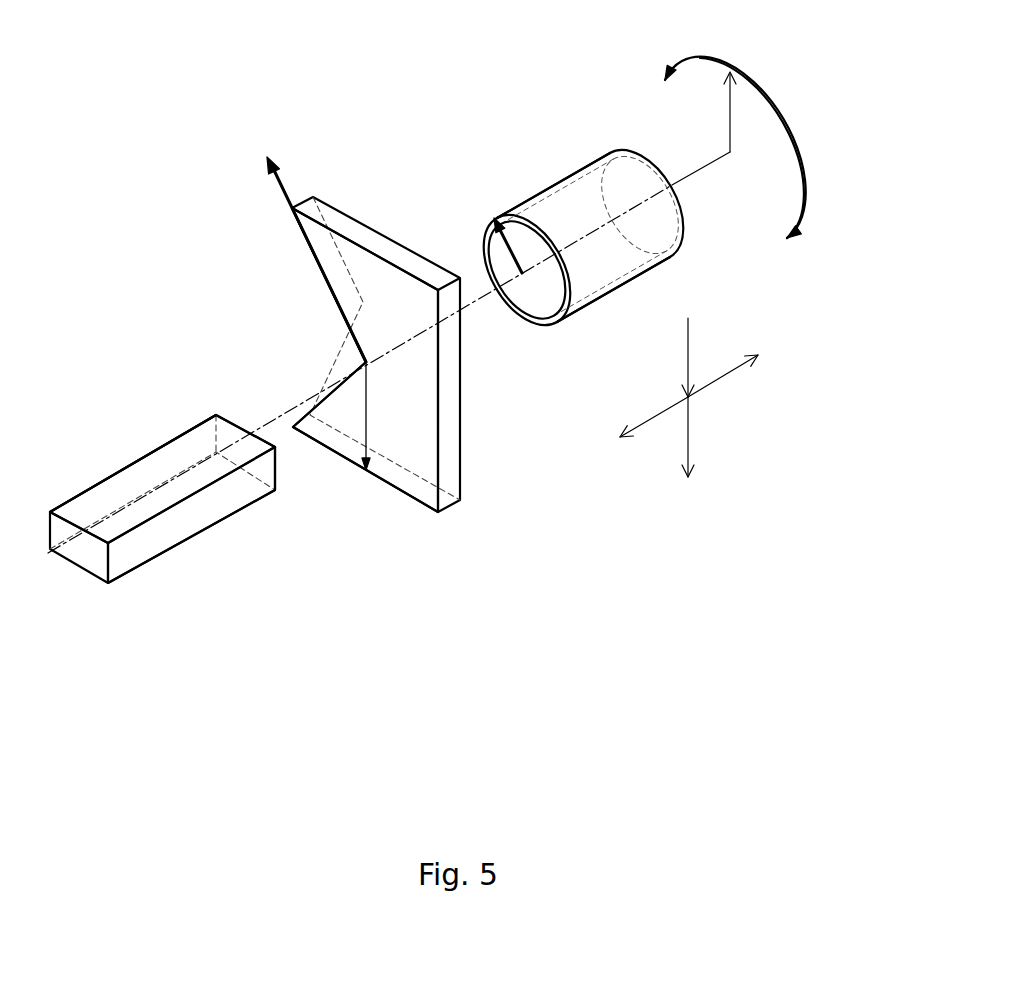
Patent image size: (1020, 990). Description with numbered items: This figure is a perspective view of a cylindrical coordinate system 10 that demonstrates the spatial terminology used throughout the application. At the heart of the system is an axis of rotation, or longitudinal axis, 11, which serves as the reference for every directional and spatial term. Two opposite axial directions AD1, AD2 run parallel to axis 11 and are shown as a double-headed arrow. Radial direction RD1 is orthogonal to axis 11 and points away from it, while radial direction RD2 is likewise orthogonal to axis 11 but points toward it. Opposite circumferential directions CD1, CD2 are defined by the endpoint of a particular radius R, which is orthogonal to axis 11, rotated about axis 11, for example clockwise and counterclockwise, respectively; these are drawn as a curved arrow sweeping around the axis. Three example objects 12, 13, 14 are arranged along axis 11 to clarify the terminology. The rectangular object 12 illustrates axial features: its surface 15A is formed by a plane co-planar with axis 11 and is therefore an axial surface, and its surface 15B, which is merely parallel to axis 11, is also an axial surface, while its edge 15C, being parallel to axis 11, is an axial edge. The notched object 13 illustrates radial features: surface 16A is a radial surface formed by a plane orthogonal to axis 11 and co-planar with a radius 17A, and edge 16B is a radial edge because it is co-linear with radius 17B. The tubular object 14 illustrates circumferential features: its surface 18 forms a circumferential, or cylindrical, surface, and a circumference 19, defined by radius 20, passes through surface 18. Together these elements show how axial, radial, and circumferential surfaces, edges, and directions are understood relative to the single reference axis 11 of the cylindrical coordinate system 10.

The cylindrical coordinate system 10 is at (250, 277).
The axis of rotation 11 is at (672, 183).
The object 12 is at (130, 573).
The object 13 is at (468, 500).
The object 14 is at (605, 298).
The axial surface 15A is at (130, 482).
The axial surface 15B is at (182, 518).
The axial edge 15C is at (155, 457).
The radial surface 16A is at (373, 272).
The radial edge 16B is at (322, 265).
The radius 17A is at (367, 410).
The radius 17B is at (278, 188).
The circumferential surface 18 is at (553, 180).
The circumference 19 is at (483, 233).
The radius 20 is at (483, 280).
The radius R is at (730, 108).
The circumferential direction CD1 is at (803, 200).
The circumferential direction CD2 is at (700, 58).
The axial direction AD1 is at (717, 377).
The axial direction AD2 is at (657, 415).
The radial direction RD1 is at (690, 447).
The radial direction RD2 is at (692, 335).